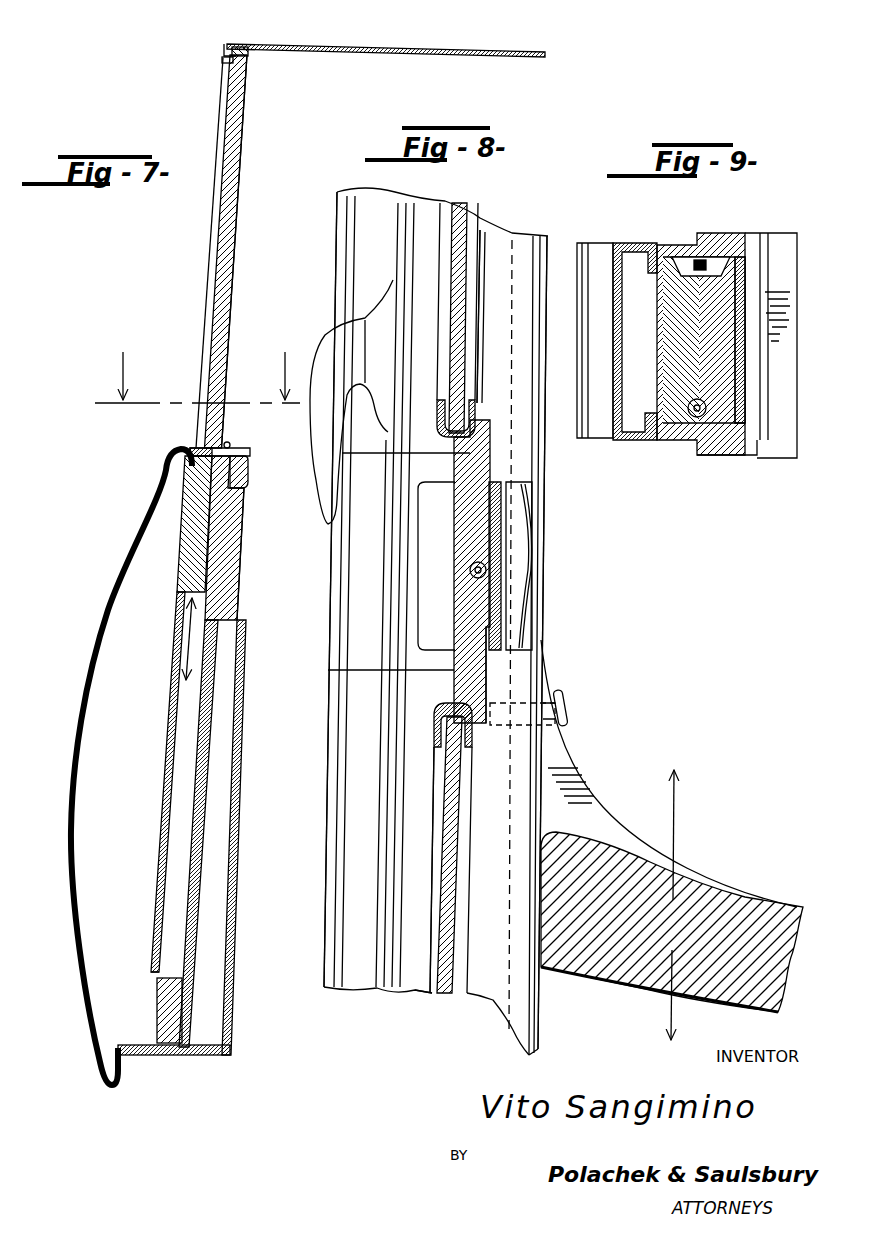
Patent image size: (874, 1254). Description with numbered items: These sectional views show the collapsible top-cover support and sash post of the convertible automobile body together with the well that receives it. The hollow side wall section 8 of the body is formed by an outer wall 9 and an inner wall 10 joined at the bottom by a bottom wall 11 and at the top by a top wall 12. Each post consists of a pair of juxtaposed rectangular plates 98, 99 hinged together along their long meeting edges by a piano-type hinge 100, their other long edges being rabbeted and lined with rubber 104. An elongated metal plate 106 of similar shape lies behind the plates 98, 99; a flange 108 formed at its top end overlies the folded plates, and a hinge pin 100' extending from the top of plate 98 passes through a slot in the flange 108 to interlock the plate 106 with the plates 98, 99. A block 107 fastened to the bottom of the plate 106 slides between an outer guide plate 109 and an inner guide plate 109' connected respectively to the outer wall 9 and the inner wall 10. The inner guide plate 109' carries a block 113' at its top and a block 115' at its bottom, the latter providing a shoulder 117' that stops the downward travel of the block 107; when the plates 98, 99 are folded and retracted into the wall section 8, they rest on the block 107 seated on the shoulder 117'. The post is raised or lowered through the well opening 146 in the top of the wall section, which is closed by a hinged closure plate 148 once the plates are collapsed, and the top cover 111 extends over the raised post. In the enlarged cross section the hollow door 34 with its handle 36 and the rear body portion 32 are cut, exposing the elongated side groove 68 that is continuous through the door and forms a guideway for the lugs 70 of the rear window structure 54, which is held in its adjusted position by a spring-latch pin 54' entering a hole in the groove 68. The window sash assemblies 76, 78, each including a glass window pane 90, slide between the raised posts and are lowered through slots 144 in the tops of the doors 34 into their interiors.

In FIG. 7, the hollow side wall section 8 is at (42, 863).
In FIG. 8, the hollow side wall section 8 is at (327, 605).
In FIG. 9, the hollow side wall section 8 is at (604, 240).
In FIG. 7, the outer wall 9 is at (70, 740).
In FIG. 9, the outer wall 9 is at (613, 357).
In FIG. 7, the inner wall 10 is at (238, 762).
In FIG. 9, the inner wall 10 is at (777, 428).
In FIG. 7, the bottom wall 11 is at (207, 1058).
In FIG. 7, the top wall 12 is at (246, 453).
In FIG. 8, the rear body portion 32 is at (492, 992).
In FIG. 8, the hollow door 34 is at (352, 246).
In FIG. 8, the handle 36 is at (325, 470).
In FIG. 8, the rear window structure 54 is at (672, 840).
In FIG. 8, the spring-latch pin 54' is at (583, 714).
In FIG. 7, the elongated side groove 68 is at (244, 517).
In FIG. 8, the elongated side groove 68 is at (518, 1006).
In FIG. 8, the lug 70 is at (545, 977).
In FIG. 8, the window sash assembly 76 is at (428, 977).
In FIG. 8, the window sash assembly 78 is at (480, 231).
In FIG. 7, the glass window pane 90 is at (205, 289).
In FIG. 8, the glass window pane 90 is at (458, 345).
In FIG. 8, the rectangular plate 98 is at (474, 467).
In FIG. 9, the rectangular plate 98 is at (720, 297).
In FIG. 7, the rectangular plate 99 is at (222, 262).
In FIG. 8, the rectangular plate 99 is at (472, 668).
In FIG. 9, the rectangular plate 99 is at (675, 256).
In FIG. 8, the piano-type hinge 100 is at (541, 577).
In FIG. 9, the piano-type hinge 100 is at (677, 451).
In FIG. 7, the hinge pin 100' is at (260, 36).
In FIG. 8, the rubber lining 104 is at (468, 430).
In FIG. 9, the rubber lining 104 is at (706, 258).
In FIG. 7, the elongated metal plate 106 is at (238, 197).
In FIG. 8, the elongated metal plate 106 is at (500, 493).
In FIG. 9, the elongated metal plate 106 is at (745, 350).
In FIG. 7, the block 107 is at (198, 568).
In FIG. 7, the flange 108 is at (228, 58).
In FIG. 7, the outer guide plate 109 is at (156, 782).
In FIG. 7, the inner guide plate 109' is at (238, 833).
In FIG. 7, the top cover 111 is at (393, 48).
In FIG. 7, the block 113' is at (267, 554).
In FIG. 7, the block 115' is at (144, 1010).
In FIG. 7, the shoulder 117' is at (134, 952).
In FIG. 8, the slot 144 is at (433, 992).
In FIG. 7, the well opening 146 is at (192, 446).
In FIG. 8, the well opening 146 is at (431, 552).
In FIG. 9, the well opening 146 is at (712, 455).
In FIG. 7, the closure plate 148 is at (231, 442).
In FIG. 8, the closure plate 148 is at (531, 524).